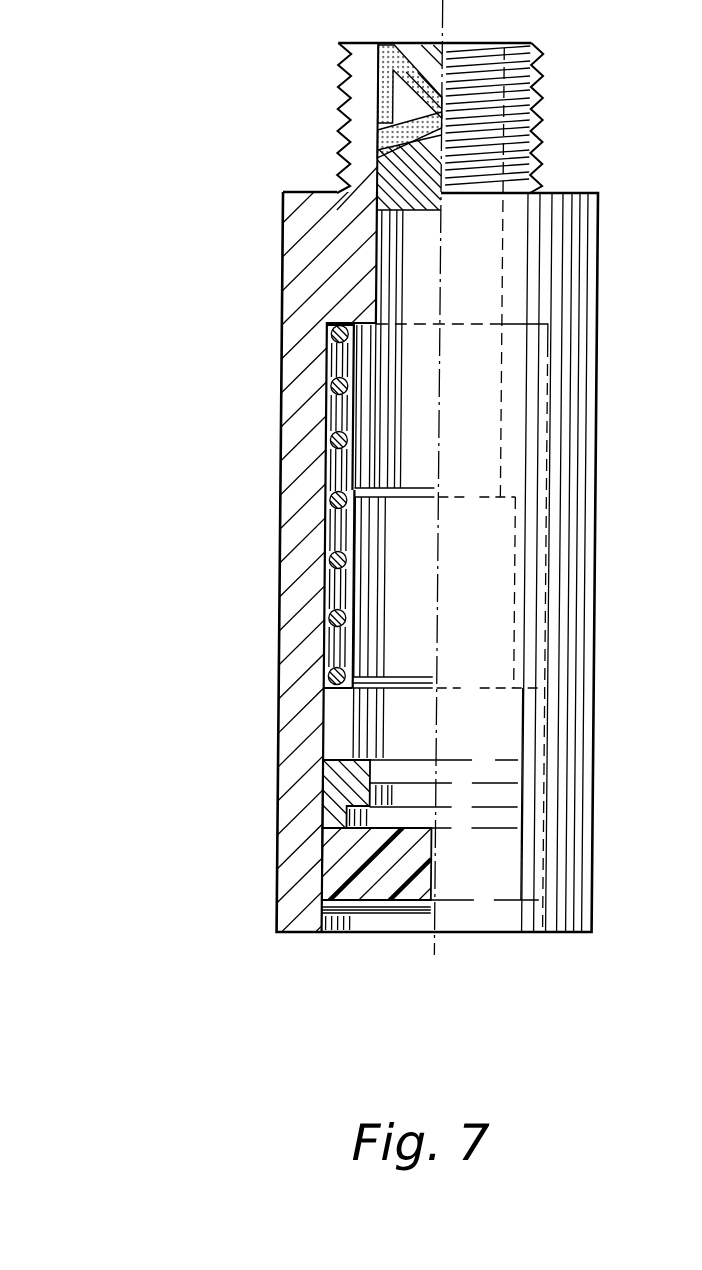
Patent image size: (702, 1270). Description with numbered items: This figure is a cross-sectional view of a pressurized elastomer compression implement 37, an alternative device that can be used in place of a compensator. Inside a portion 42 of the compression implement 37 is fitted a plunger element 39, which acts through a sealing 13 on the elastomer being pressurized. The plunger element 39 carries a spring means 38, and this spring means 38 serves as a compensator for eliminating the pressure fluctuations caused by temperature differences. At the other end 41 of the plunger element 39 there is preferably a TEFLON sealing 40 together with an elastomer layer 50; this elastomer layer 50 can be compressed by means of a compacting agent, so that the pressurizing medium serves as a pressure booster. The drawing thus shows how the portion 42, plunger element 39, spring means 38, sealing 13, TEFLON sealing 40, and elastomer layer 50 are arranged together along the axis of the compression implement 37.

The sealing 13 is at (385, 118).
The compression implement 37 is at (232, 559).
The spring means 38 is at (330, 400).
The plunger element 39 is at (380, 163).
The TEFLON sealing 40 is at (342, 800).
The other end 41 is at (403, 820).
The portion 42 is at (325, 272).
The elastomer layer 50 is at (370, 868).